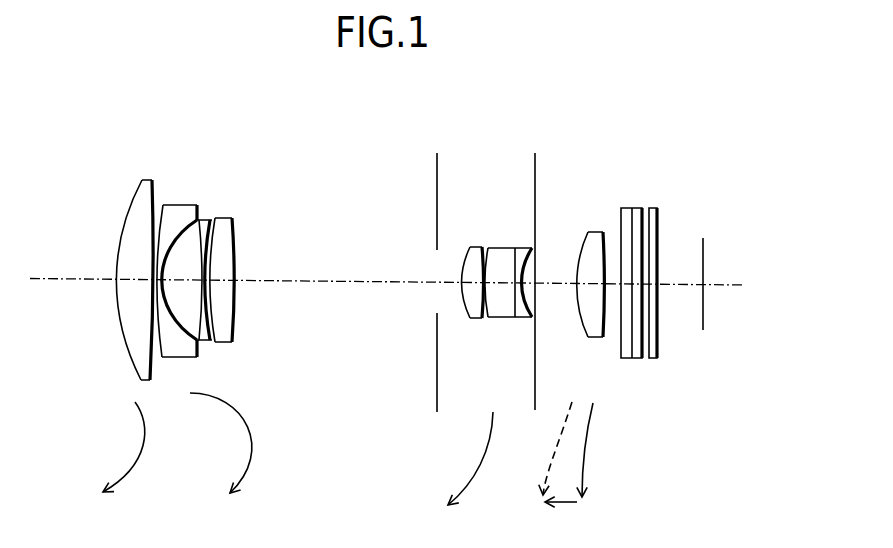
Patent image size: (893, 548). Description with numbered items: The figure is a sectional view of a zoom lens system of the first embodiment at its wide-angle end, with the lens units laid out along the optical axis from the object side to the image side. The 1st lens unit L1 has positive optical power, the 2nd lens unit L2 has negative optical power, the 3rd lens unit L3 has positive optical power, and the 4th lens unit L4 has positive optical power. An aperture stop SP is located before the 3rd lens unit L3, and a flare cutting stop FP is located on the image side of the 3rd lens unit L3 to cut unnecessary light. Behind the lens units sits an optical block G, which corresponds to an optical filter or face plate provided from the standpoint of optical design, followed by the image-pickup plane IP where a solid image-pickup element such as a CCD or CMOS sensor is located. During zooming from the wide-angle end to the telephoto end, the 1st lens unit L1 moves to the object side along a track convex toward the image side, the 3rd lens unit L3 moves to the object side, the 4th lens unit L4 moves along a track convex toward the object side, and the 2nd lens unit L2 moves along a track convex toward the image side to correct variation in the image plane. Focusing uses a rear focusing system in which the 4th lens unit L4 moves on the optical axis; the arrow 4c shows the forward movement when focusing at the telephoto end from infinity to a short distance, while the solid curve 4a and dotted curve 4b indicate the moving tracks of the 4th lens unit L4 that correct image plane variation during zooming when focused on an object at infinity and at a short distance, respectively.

The 1st lens unit L1 is at (100, 142).
The 2nd lens unit L2 is at (167, 182).
The 3rd lens unit L3 is at (437, 117).
The 4th lens unit L4 is at (612, 167).
The aperture stop SP is at (437, 177).
The flare cutting stop FP is at (535, 198).
The optical block G is at (617, 208).
The image-pickup plane IP is at (703, 250).
The solid curve 4a is at (548, 458).
The dotted curve 4b is at (585, 440).
The arrow 4c is at (562, 505).